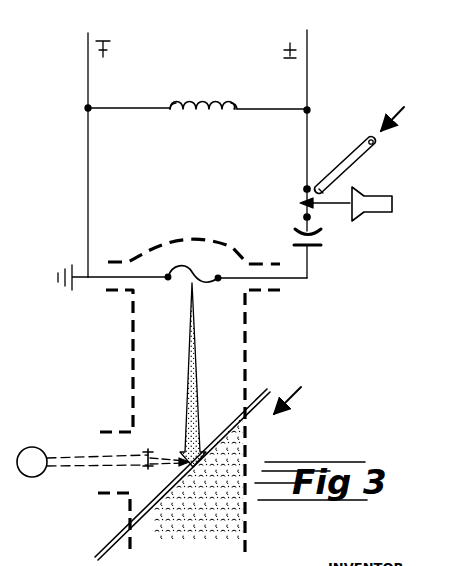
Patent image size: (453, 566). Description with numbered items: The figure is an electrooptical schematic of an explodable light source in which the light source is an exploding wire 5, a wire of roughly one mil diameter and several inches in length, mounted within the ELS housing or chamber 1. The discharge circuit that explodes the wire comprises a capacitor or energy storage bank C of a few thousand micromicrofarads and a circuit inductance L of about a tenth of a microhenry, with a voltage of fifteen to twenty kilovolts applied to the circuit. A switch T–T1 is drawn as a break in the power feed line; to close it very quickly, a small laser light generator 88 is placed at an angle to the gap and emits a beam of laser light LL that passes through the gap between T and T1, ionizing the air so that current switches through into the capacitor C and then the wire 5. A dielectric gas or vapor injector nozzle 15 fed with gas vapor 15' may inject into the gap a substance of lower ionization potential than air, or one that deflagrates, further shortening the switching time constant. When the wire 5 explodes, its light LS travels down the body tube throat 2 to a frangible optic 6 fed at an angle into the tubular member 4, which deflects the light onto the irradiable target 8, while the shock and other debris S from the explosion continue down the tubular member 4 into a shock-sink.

The ELS housing 1 is at (176, 243).
The body tube throat 2 is at (133, 320).
The tubular member 4 is at (248, 440).
The wire 5 is at (185, 271).
The frangible optic 6 is at (258, 392).
The irradiable target 8 is at (22, 451).
The gas or vapor injector nozzle 15 is at (355, 165).
The gas vapor 15' is at (407, 114).
The laser light generator 88 is at (391, 196).
The circuit inductance L is at (223, 99).
The switch terminal T is at (300, 190).
The switch terminal T1 is at (304, 218).
The laser light beam LL is at (326, 207).
The capacitor C is at (310, 251).
The light LS is at (197, 367).
The shock and debris S is at (187, 500).